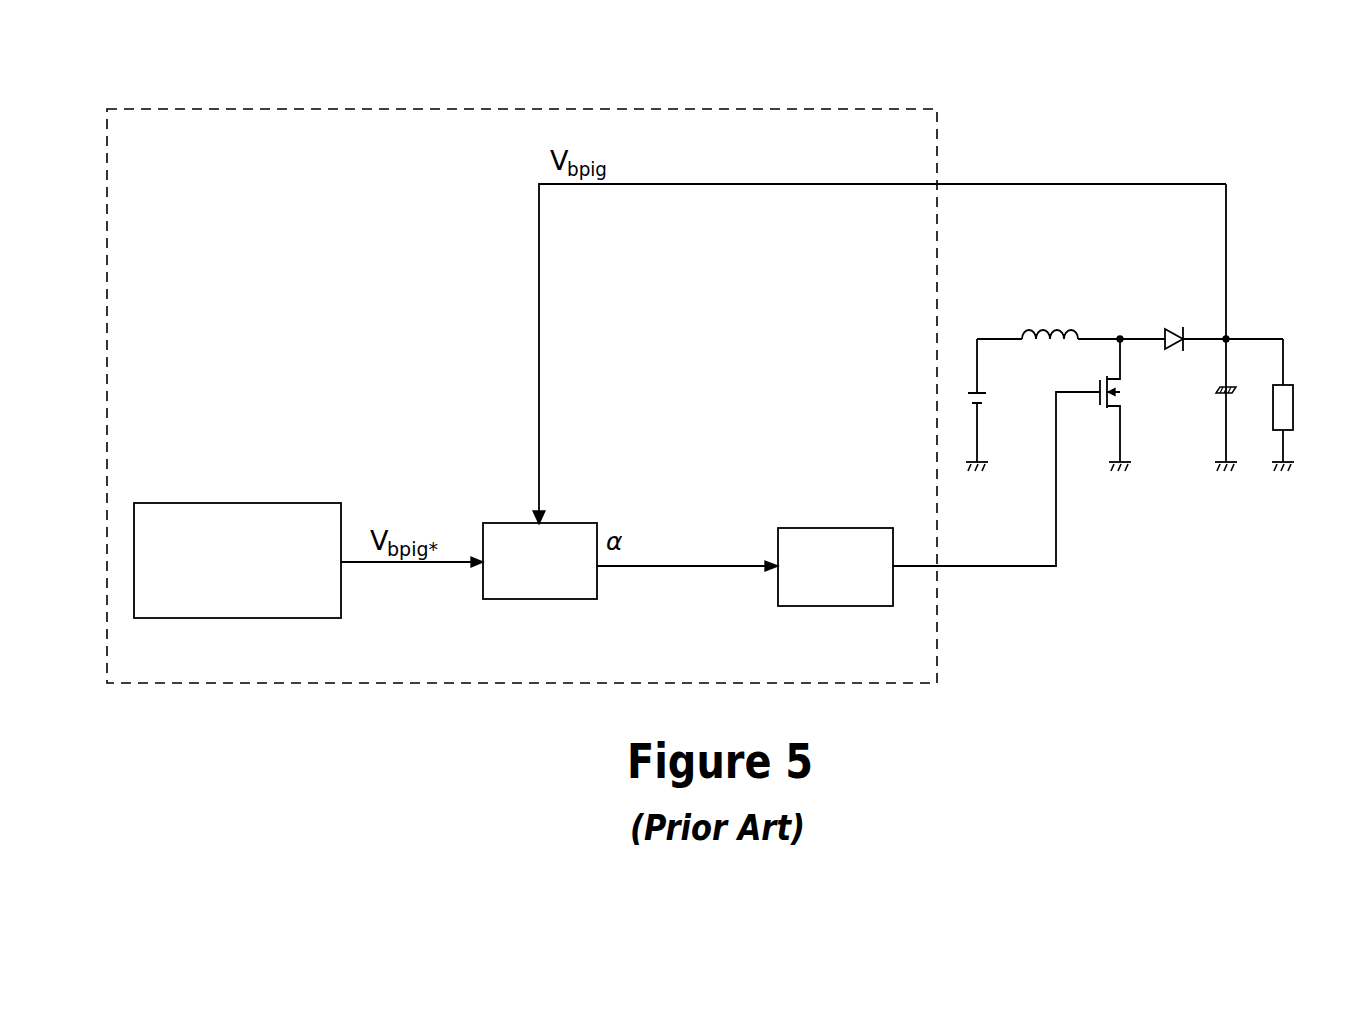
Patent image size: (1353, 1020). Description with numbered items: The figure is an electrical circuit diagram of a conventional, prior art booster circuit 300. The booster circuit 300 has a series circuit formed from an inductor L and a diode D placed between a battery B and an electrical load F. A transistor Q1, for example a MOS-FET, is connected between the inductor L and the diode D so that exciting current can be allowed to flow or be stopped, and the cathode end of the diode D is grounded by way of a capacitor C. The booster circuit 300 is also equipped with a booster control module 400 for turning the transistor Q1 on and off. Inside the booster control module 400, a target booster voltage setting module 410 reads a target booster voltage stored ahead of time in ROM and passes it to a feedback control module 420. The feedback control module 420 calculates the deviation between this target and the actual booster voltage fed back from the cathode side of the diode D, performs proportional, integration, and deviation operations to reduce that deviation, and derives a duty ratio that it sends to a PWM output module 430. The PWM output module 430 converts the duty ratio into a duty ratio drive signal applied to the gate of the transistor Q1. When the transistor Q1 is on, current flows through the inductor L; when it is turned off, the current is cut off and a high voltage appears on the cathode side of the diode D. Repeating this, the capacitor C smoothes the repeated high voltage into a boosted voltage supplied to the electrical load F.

The booster control module 400 is at (213, 109).
The target booster voltage setting module 410 is at (174, 503).
The feedback control module 420 is at (563, 600).
The PWM output module 430 is at (865, 528).
The booster circuit 300 is at (1173, 94).
The battery B is at (975, 397).
The inductor L is at (1067, 330).
The transistor Q1 is at (1100, 392).
The diode D is at (1171, 331).
The capacitor C is at (1234, 392).
The electrical load F is at (1294, 400).